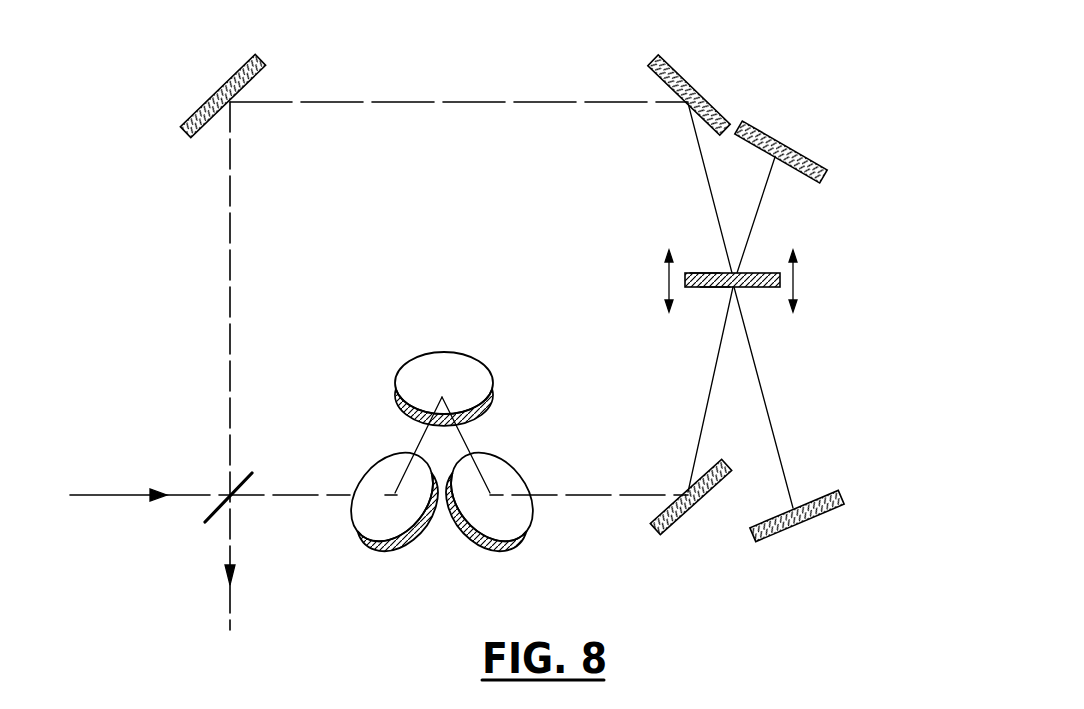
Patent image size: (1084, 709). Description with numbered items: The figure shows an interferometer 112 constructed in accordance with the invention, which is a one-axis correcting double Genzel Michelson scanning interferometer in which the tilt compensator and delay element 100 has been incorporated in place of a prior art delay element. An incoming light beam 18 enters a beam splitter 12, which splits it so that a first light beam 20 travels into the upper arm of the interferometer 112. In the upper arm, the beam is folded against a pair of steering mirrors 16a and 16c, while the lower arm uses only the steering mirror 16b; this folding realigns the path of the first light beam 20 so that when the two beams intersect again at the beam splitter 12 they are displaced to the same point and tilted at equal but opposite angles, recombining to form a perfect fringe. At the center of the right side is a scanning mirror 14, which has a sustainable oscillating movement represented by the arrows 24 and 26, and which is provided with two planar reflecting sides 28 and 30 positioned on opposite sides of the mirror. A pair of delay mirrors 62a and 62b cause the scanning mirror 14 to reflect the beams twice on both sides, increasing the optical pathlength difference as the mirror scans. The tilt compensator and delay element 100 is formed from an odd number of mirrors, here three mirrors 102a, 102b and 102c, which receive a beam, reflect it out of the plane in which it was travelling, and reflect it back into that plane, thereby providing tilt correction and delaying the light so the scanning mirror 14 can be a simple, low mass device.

The beam splitter 12 is at (213, 520).
The scanning mirror 14 is at (750, 272).
The steering mirror 16a is at (212, 98).
The steering mirror 16b is at (677, 533).
The steering mirror 16c is at (692, 82).
The light beam 18 is at (88, 495).
The first light beam 20 is at (228, 187).
The arrow 24 is at (795, 280).
The arrow 26 is at (665, 280).
The reflecting side 28 is at (698, 272).
The reflecting side 30 is at (707, 288).
The delay mirror 62a is at (777, 140).
The delay mirror 62b is at (795, 527).
The tilt compensator and delay element 100 is at (441, 445).
The mirror 102a is at (385, 547).
The mirror 102b is at (418, 357).
The mirror 102c is at (497, 543).
The interferometer 112 is at (488, 78).